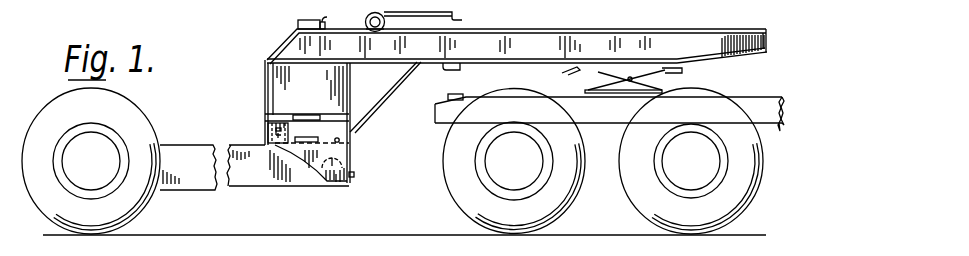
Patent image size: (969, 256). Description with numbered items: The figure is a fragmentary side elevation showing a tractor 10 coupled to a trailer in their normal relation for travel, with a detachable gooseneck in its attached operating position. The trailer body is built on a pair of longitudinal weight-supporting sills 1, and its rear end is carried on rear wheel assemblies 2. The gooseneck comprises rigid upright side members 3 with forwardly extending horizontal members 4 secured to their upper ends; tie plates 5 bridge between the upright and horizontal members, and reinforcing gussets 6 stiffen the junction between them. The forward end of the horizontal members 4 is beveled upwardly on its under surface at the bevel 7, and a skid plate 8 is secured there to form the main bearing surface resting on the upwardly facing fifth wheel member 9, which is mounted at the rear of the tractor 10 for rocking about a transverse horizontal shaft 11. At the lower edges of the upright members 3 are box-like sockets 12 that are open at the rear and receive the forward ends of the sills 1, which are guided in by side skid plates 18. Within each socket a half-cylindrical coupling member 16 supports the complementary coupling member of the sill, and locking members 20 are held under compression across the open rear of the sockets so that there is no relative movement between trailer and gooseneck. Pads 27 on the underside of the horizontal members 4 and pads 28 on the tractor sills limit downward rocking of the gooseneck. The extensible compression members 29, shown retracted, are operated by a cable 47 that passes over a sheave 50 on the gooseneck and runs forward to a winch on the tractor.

The longitudinal sill 1 is at (200, 147).
The rear wheel assembly 2 is at (128, 113).
The upright side member 3 is at (311, 102).
The horizontal member 4 is at (272, 54).
The tie plate 5 is at (265, 89).
The reinforcing gusset 6 is at (371, 95).
The bevel 7 is at (764, 50).
The skid plate 8 is at (725, 58).
The fifth wheel member 9 is at (672, 68).
The tractor 10 is at (753, 95).
The horizontal shaft 11 is at (624, 79).
The socket 12 is at (343, 153).
The coupling member 16 is at (343, 167).
The side skid plate 18 is at (265, 167).
The locking member 20 is at (265, 131).
The pad 27 is at (447, 70).
The pad 28 is at (458, 94).
The extensible compression member 29 is at (325, 17).
The cable 47 is at (458, 18).
The sheave 50 is at (386, 23).